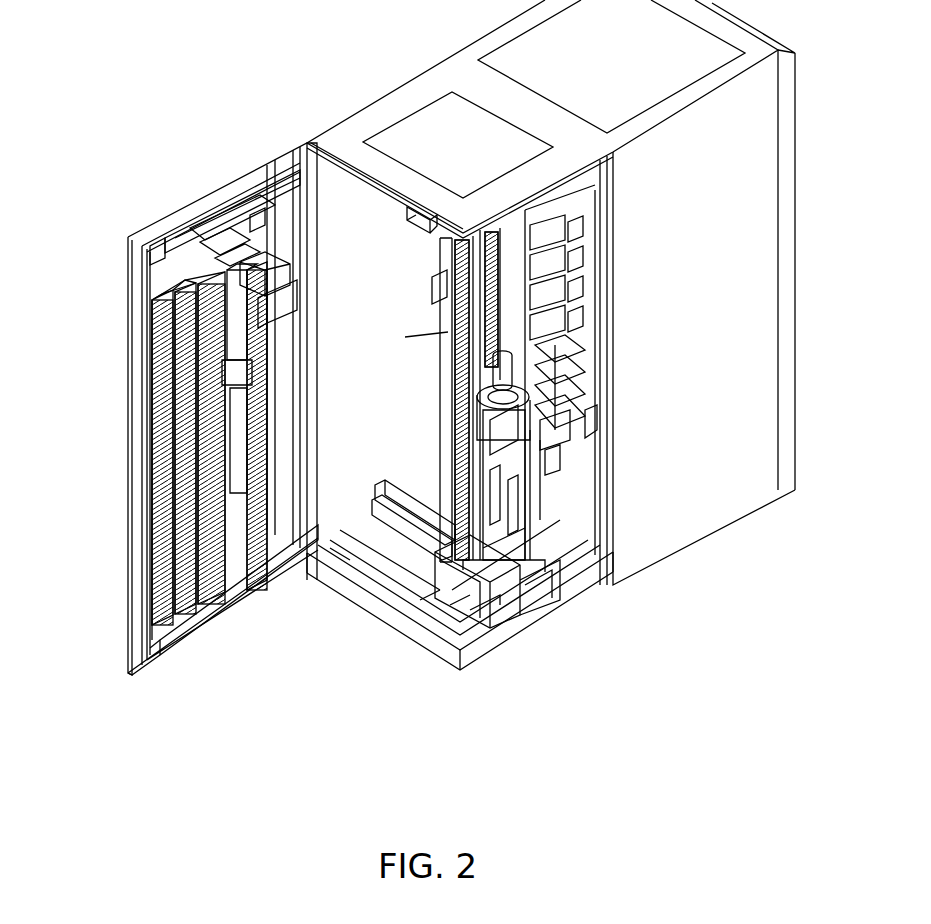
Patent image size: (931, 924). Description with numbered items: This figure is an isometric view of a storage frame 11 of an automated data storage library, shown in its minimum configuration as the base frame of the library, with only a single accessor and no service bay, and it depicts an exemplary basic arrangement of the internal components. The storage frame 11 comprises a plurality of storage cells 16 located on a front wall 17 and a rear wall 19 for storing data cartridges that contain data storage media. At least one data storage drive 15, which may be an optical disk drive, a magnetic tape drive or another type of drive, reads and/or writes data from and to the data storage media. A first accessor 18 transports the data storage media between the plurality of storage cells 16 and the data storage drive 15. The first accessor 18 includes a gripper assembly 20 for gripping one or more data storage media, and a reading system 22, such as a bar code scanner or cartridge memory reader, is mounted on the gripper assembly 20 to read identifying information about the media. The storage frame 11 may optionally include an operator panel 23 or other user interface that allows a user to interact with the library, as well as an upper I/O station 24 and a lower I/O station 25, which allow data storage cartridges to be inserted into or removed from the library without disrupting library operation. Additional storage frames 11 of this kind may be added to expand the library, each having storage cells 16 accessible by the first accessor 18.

The storage frame 11 is at (356, 683).
The data storage drive 15 is at (577, 230).
The storage cells 16 is at (148, 513).
The front wall 17 is at (138, 385).
The first accessor 18 is at (497, 597).
The rear wall 19 is at (440, 262).
The gripper assembly 20 is at (567, 413).
The reading system 22 is at (477, 440).
The operator panel 23 is at (283, 240).
The upper I/O station 24 is at (275, 272).
The lower I/O station 25 is at (265, 433).